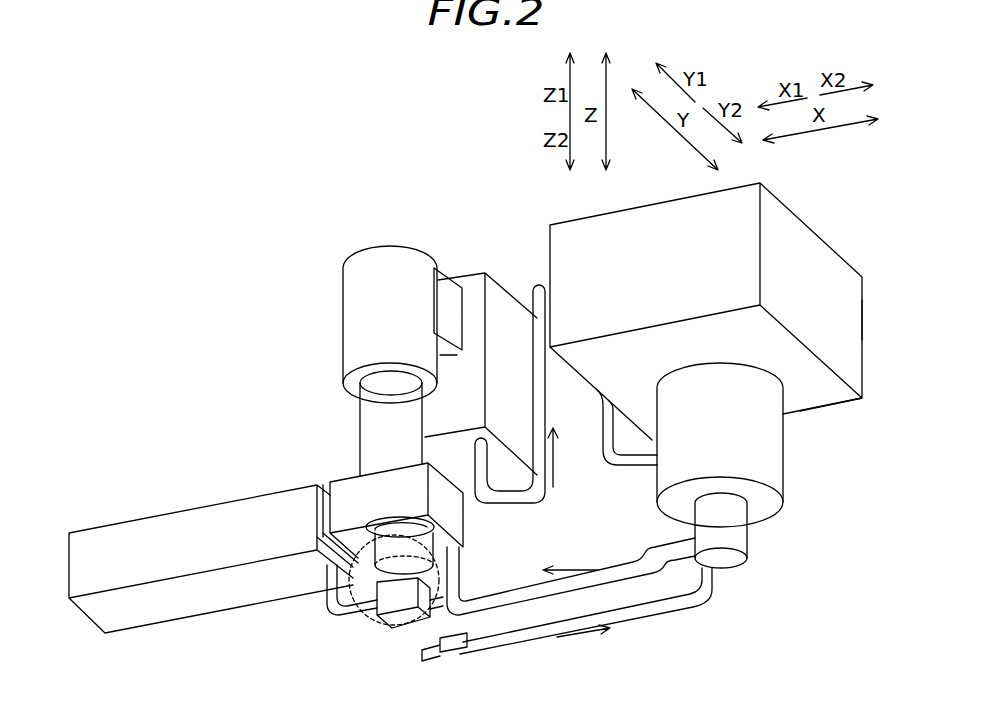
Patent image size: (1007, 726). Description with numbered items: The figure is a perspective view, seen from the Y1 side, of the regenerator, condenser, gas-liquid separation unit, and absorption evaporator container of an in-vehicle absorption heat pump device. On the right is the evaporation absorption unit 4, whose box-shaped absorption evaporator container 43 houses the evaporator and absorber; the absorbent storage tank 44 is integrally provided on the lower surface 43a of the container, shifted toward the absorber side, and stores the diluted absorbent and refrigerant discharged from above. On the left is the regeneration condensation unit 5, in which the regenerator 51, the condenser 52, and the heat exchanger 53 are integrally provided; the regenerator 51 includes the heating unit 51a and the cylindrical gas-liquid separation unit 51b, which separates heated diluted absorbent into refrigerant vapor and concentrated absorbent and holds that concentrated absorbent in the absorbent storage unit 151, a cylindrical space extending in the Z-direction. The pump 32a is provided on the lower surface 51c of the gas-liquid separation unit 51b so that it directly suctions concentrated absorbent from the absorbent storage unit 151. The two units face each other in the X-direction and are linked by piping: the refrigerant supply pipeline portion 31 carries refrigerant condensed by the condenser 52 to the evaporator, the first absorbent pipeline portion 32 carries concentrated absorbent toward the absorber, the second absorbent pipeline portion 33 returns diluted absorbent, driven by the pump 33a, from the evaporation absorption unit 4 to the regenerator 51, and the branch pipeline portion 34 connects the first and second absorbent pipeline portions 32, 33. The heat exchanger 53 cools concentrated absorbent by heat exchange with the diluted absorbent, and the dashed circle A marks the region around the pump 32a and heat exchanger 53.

The evaporation absorption unit 4 is at (841, 217).
The absorption evaporator container 43 is at (862, 318).
The lower surface 43a is at (813, 400).
The absorbent storage tank 44 is at (783, 451).
The pump 33a is at (721, 568).
The refrigerant supply pipeline portion 31 is at (543, 284).
The first absorbent pipeline portion 32 is at (682, 612).
The pump 32a is at (433, 550).
The second absorbent pipeline portion 33 is at (495, 595).
The branch pipeline portion 34 is at (327, 616).
The regeneration condensation unit 5 is at (338, 225).
The regenerator 51 is at (295, 390).
The heating unit 51a is at (248, 495).
The gas-liquid separation unit 51b is at (343, 310).
The lower surface 51c is at (353, 565).
The absorbent storage unit 151 is at (360, 435).
The condenser 52 is at (485, 268).
The heat exchanger 53 is at (417, 647).
The region A is at (385, 625).